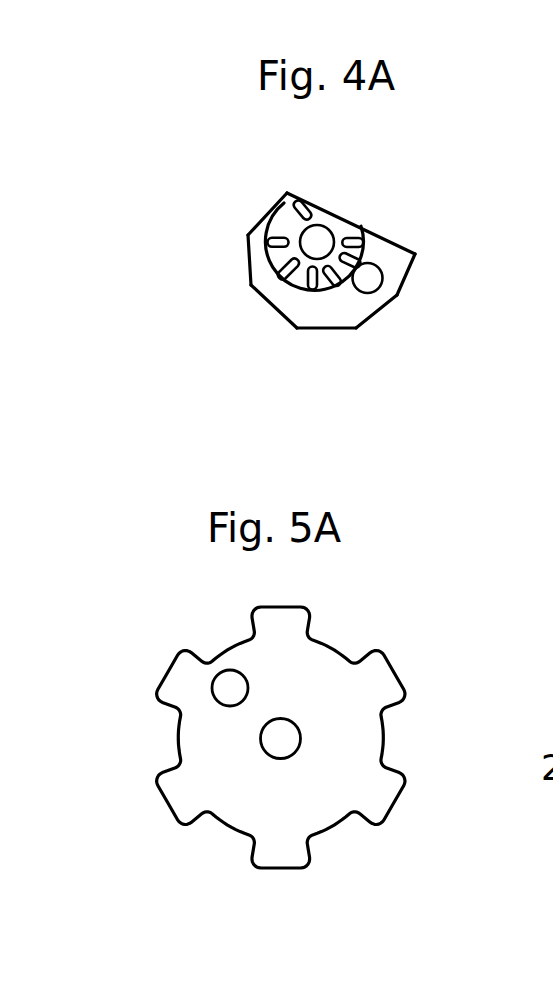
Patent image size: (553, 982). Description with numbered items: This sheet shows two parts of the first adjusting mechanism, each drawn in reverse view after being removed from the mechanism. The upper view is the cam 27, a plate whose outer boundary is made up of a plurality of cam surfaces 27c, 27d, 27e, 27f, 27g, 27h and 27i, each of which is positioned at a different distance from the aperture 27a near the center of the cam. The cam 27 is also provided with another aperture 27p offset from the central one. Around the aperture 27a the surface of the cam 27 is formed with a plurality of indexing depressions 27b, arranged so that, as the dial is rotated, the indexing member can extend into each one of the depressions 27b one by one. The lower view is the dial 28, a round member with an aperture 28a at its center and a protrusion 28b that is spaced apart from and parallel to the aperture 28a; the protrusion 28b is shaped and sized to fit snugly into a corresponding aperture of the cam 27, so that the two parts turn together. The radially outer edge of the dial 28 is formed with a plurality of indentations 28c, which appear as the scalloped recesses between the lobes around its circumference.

In FIG. 4A, the cam 27 is at (324, 277).
In FIG. 4A, the aperture 27a is at (321, 234).
In FIG. 4A, the indexing depressions 27b is at (268, 242).
In FIG. 4A, the cam surface 27c is at (313, 203).
In FIG. 4A, the cam surface 27d is at (407, 282).
In FIG. 4A, the cam surface 27e is at (382, 310).
In FIG. 4A, the cam surface 27f is at (308, 330).
In FIG. 4A, the cam surface 27g is at (285, 320).
In FIG. 4A, the cam surface 27h is at (249, 277).
In FIG. 4A, the cam surface 27i is at (265, 215).
In FIG. 4A, the aperture 27p is at (376, 275).
In FIG. 5A, the dial 28 is at (353, 632).
In FIG. 5A, the aperture 28a is at (287, 740).
In FIG. 5A, the protrusion 28b is at (225, 695).
In FIG. 5A, the indentations 28c is at (213, 821).